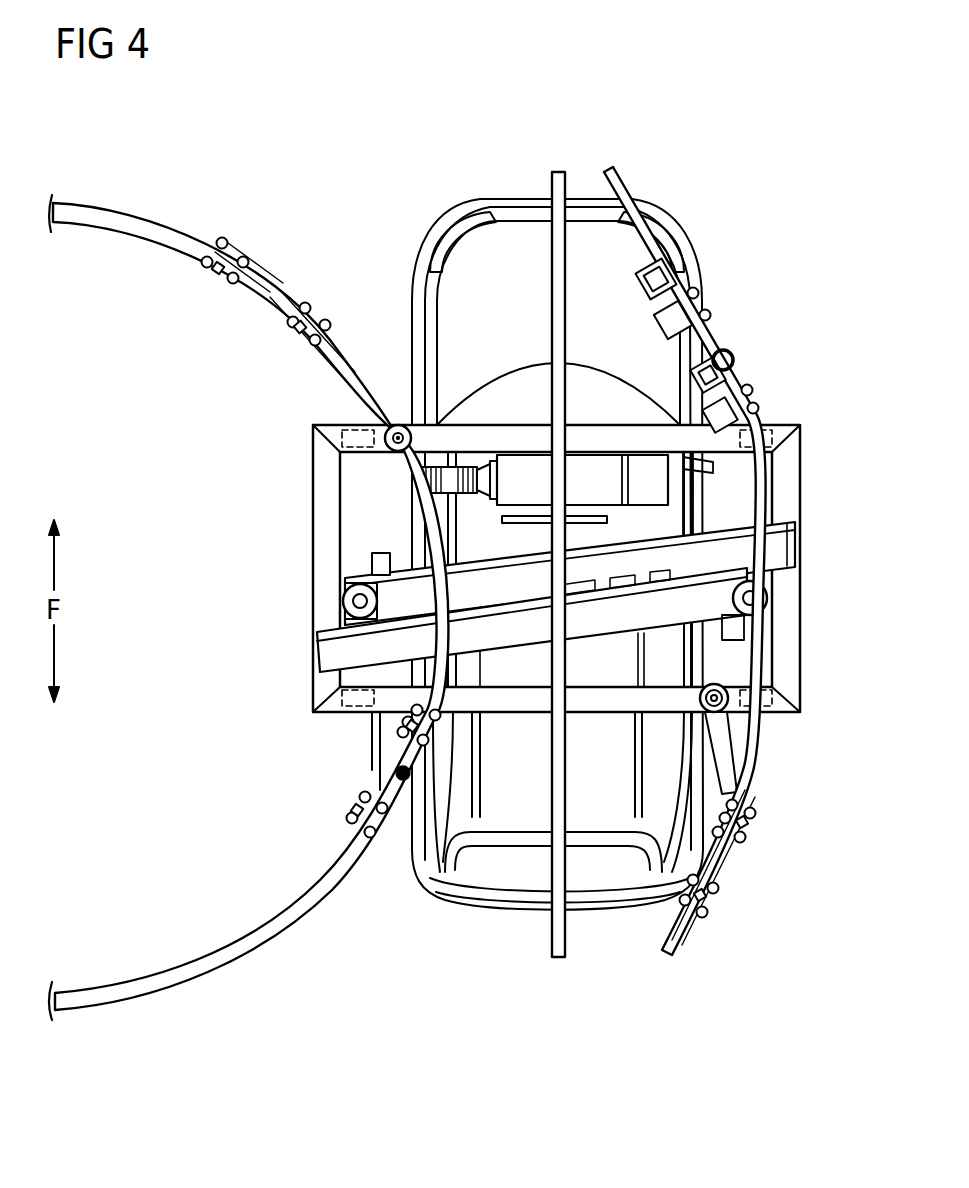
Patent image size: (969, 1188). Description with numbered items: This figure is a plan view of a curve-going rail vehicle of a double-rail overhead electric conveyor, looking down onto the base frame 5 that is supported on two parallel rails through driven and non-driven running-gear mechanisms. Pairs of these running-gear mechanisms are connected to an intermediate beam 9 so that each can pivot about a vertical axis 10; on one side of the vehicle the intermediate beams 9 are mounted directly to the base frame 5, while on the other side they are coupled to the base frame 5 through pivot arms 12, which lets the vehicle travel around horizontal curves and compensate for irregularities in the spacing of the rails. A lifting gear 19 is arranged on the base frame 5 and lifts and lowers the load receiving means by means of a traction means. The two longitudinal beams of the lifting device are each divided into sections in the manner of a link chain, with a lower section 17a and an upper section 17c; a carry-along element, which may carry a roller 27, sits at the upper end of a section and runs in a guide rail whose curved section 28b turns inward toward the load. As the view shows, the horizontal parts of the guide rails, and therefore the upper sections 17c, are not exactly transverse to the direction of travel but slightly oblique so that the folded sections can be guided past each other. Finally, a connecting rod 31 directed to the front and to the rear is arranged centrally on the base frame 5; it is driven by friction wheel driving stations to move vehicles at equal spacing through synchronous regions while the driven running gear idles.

The base frame 5 is at (783, 653).
The intermediate beam 9 is at (710, 336).
The vertical axis 10 is at (730, 856).
The pivot arm 12 is at (327, 362).
The lower section of longitudinal beam 17a is at (770, 597).
The upper section of longitudinal beam 17c is at (602, 642).
The lifting gear 19 is at (530, 462).
The roller 27 is at (528, 662).
The curved section of guide rail 28b is at (398, 568).
The connecting rod 31 is at (560, 305).